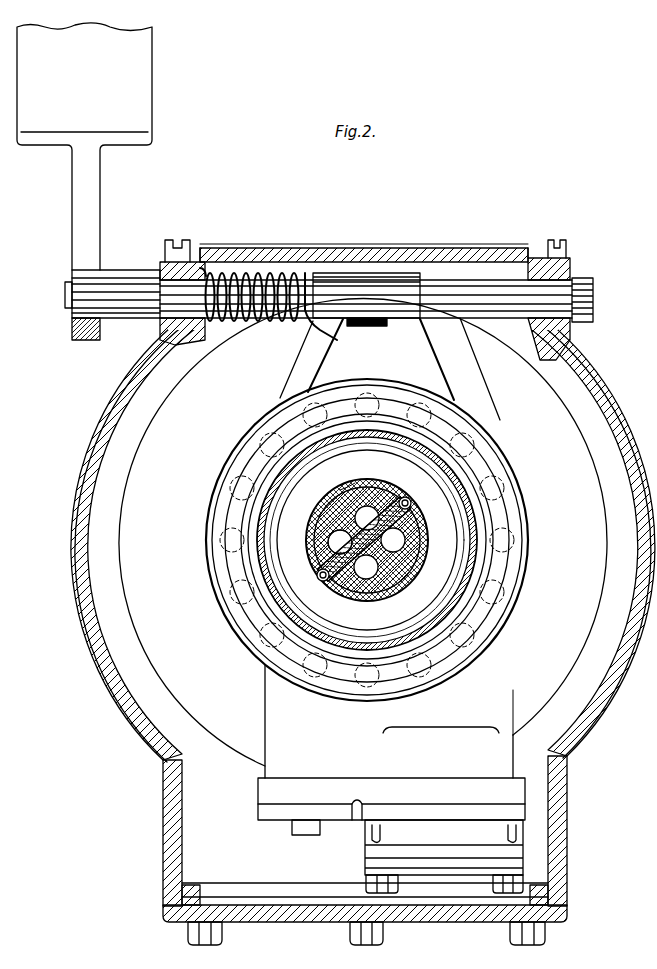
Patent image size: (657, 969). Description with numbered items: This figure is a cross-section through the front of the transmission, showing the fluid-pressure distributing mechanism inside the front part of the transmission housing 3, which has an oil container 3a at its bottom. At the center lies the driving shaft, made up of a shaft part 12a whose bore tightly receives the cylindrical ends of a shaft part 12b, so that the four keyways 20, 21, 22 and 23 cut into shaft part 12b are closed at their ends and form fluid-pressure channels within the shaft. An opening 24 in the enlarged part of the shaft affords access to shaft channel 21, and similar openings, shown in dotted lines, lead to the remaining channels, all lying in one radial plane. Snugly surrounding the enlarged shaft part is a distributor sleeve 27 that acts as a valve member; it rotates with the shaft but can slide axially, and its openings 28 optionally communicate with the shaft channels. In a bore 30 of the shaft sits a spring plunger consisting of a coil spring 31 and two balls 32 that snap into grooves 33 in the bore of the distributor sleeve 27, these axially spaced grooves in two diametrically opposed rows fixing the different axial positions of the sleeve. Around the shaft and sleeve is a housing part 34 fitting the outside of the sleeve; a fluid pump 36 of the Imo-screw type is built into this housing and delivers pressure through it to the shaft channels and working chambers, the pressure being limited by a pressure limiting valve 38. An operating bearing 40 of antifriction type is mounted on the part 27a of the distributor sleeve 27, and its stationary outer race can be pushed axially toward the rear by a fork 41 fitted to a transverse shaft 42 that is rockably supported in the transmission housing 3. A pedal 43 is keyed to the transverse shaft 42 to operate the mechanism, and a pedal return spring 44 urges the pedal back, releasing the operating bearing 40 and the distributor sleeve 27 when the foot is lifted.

The front part of transmission housing 3 is at (596, 376).
The oil container 3a is at (190, 847).
The shaft part 12a is at (389, 578).
The shaft part 12b is at (407, 568).
The keyway 20 is at (414, 541).
The keyway 21 is at (367, 507).
The keyway 22 is at (320, 546).
The keyway 23 is at (366, 580).
The opening 24 is at (330, 538).
The distributor sleeve 27 is at (386, 486).
The part of distributor sleeve 27a is at (492, 557).
The openings 28 is at (352, 484).
The bore 30 is at (336, 506).
The coil spring 31 is at (413, 520).
The balls 32 is at (409, 505).
The grooves 33 is at (406, 499).
The housing part 34 is at (508, 697).
The fluid pump 36 is at (275, 711).
The pressure limiting valve 38 is at (312, 830).
The operating bearing 40 is at (505, 493).
The fork 41 is at (412, 350).
The transverse shaft 42 is at (491, 319).
The pedal 43 is at (145, 114).
The pedal return spring 44 is at (283, 322).